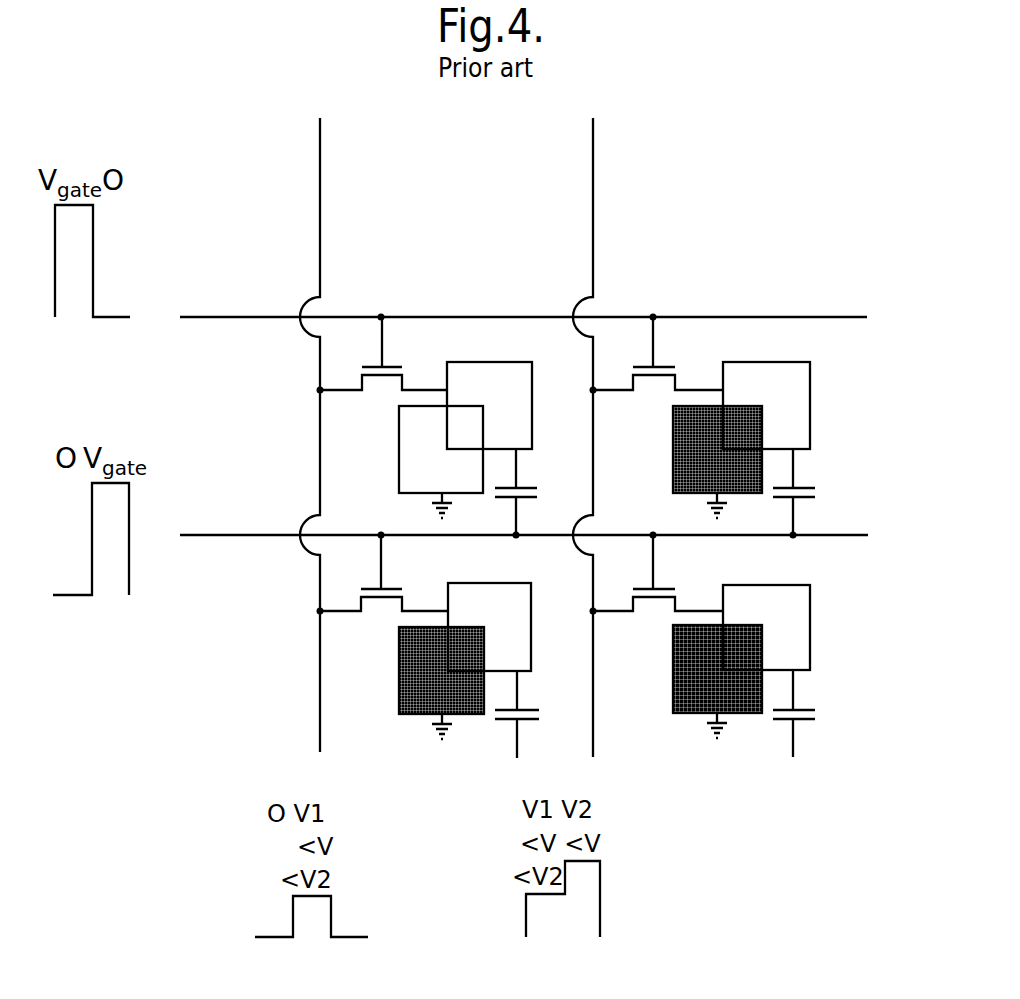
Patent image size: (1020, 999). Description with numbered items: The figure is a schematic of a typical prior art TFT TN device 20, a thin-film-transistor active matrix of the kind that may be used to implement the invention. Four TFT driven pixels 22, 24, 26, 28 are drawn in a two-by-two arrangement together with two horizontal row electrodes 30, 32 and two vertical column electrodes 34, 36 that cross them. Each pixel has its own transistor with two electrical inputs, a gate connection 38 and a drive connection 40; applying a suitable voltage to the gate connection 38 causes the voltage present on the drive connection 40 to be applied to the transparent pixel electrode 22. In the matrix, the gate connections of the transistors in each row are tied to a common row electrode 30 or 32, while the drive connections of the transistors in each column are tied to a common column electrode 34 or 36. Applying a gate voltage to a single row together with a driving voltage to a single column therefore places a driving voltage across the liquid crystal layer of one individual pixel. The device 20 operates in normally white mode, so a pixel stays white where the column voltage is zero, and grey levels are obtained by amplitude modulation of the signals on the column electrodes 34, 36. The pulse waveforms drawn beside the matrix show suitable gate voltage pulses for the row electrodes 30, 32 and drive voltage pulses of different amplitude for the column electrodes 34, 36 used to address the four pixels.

The TFT TN device 20 is at (840, 747).
The TFT driven pixel 22 is at (494, 375).
The TFT driven pixel 24 is at (810, 380).
The TFT driven pixel 26 is at (810, 612).
The TFT driven pixel 28 is at (531, 637).
The row electrode 30 is at (862, 317).
The row electrode 32 is at (864, 535).
The column electrode 34 is at (320, 156).
The column electrode 36 is at (593, 152).
The gate connection 38 is at (382, 342).
The drive connection 40 is at (339, 386).